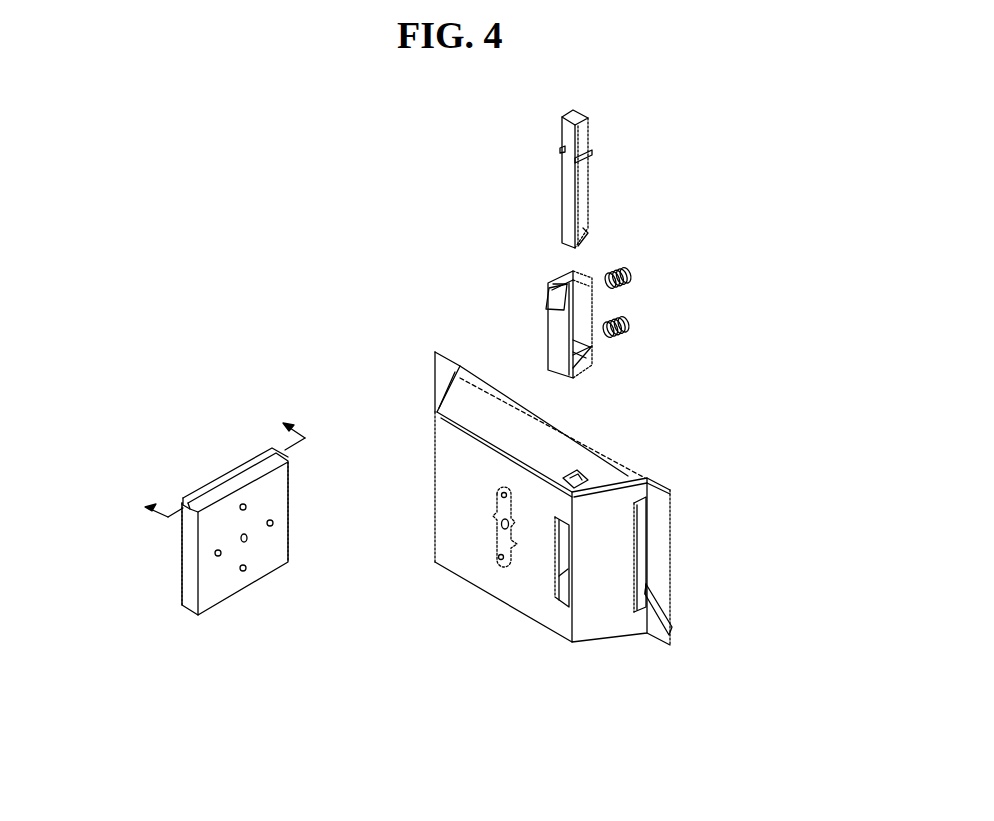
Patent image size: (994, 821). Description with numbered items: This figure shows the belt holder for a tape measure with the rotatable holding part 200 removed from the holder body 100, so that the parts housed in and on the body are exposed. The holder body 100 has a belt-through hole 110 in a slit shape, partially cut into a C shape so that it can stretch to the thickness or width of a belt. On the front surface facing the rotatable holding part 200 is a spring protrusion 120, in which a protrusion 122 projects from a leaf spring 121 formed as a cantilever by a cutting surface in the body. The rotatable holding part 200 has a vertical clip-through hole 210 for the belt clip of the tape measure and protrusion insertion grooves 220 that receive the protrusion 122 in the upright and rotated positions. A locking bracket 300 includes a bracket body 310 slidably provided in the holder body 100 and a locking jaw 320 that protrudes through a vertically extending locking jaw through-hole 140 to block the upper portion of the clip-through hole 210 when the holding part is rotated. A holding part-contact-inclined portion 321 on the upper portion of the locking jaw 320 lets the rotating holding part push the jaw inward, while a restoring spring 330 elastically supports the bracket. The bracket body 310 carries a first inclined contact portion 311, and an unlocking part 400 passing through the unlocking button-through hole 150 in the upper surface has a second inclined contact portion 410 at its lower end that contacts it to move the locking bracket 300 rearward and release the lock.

The holder body 100 is at (545, 519).
The belt-through hole 110 is at (640, 548).
The spring protrusion 120 is at (426, 564).
The leaf spring 121 is at (497, 542).
The protrusion 122 is at (499, 563).
The locking jaw through-hole 140 is at (563, 572).
The unlocking button-through hole 150 is at (575, 474).
The rotatable holding part 200 is at (234, 513).
The clip-through hole 210 is at (241, 472).
The protrusion insertion groove 220 is at (218, 557).
The locking bracket 300 is at (563, 332).
The bracket body 310 is at (580, 353).
The first inclined contact portion 311 is at (578, 363).
The locking jaw 320 is at (552, 335).
The holding part-contact-inclined portion 321 is at (558, 300).
The restoring spring 330 is at (628, 321).
The unlocking part 400 is at (577, 180).
The second inclined contact portion 410 is at (583, 235).